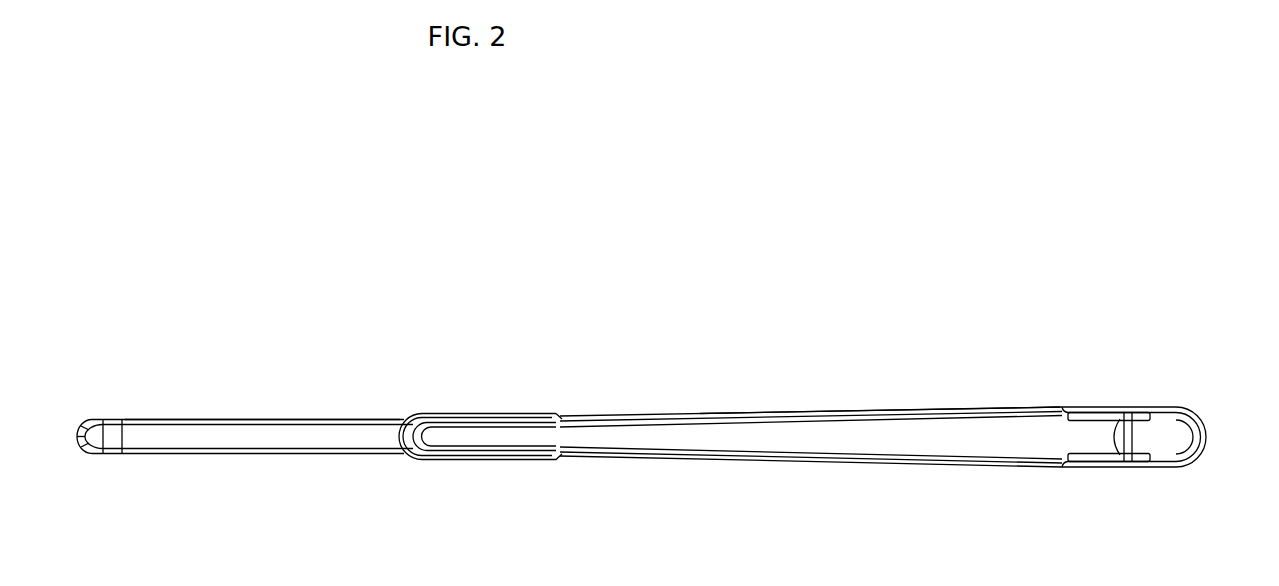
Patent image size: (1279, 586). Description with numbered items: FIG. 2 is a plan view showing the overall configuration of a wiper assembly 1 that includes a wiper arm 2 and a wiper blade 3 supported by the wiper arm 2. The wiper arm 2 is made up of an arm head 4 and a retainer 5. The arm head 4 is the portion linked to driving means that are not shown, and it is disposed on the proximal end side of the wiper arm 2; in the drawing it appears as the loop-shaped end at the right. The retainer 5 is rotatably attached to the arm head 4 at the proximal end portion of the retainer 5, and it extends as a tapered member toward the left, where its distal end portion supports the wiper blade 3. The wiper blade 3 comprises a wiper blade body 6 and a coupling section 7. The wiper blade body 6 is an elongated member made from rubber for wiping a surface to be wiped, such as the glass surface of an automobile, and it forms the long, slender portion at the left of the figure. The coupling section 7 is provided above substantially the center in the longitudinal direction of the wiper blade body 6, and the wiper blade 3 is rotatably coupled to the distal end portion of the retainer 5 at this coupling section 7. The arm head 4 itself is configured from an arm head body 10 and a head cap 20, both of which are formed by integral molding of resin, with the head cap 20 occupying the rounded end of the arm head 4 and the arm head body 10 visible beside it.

The wiper assembly 1 is at (731, 297).
The wiper arm 2 is at (765, 463).
The wiper blade 3 is at (341, 454).
The arm head 4 is at (1161, 406).
The retainer 5 is at (908, 410).
The wiper blade body 6 is at (294, 418).
The coupling section 7 is at (419, 413).
The arm head body 10 is at (1136, 468).
The head cap 20 is at (1178, 437).